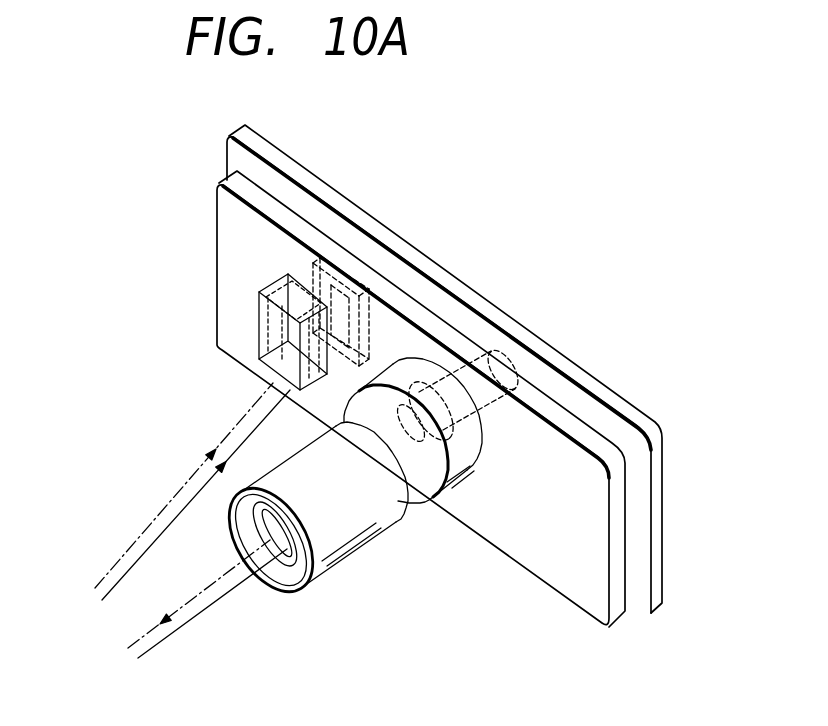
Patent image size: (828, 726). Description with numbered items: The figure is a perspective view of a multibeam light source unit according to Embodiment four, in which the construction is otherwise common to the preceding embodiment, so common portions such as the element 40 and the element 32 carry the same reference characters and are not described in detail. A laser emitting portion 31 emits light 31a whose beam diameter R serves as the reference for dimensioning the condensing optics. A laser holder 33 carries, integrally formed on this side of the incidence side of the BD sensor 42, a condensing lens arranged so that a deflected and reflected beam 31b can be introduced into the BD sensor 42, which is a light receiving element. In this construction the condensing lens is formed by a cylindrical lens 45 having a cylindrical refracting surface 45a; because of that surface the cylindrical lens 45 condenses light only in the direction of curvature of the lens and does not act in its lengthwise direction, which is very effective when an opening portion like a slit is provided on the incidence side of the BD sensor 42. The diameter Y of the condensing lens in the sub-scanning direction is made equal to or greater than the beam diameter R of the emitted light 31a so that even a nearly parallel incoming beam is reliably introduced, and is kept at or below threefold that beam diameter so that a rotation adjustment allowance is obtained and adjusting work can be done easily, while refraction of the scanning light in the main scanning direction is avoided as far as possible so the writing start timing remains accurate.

The rear plate 40 is at (337, 197).
The laser holder 33 is at (466, 272).
The BD sensor 42 is at (350, 278).
The cylindrical lens 45 is at (260, 358).
The cylindrical refracting surface 45a is at (258, 310).
The laser emitting portion 31 is at (490, 360).
The connector body 32 is at (286, 560).
The emitted light 31a is at (200, 612).
The deflected and reflected beam 31b is at (135, 546).